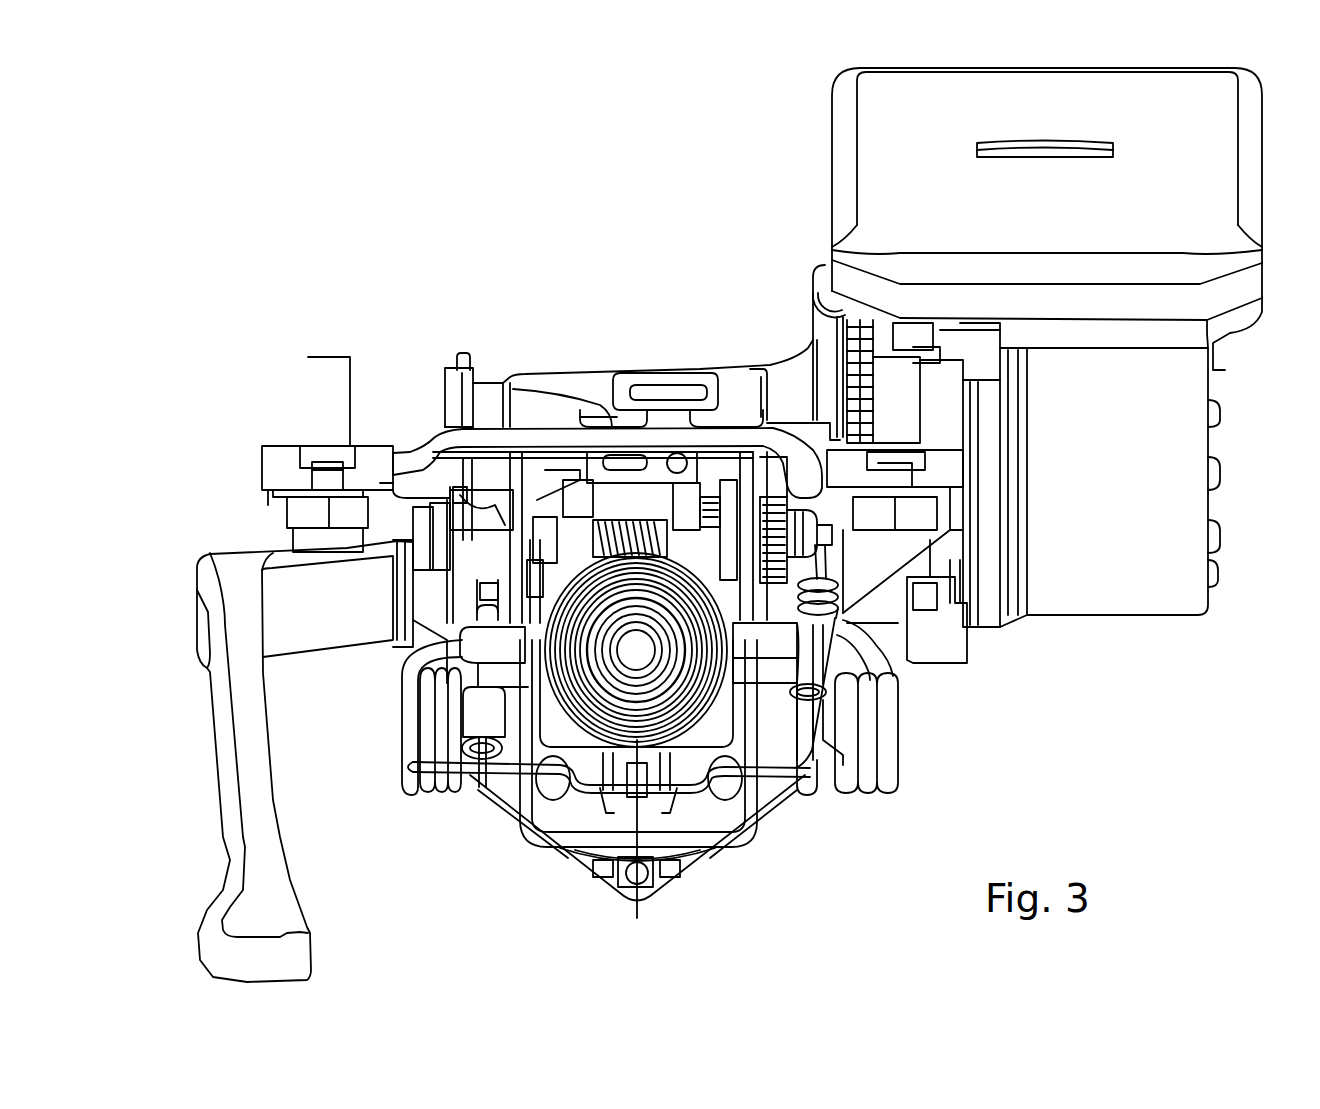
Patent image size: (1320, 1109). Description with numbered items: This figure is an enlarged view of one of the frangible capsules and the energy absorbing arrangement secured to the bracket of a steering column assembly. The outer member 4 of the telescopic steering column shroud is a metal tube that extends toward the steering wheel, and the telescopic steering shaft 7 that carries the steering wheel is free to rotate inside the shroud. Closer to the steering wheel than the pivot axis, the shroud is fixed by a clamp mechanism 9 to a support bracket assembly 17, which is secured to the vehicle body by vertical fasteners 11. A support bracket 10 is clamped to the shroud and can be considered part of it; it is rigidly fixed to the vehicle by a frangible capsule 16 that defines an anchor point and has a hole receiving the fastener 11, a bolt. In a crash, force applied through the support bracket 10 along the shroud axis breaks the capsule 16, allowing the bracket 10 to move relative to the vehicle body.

The outer member 4 is at (733, 680).
The telescopic steering shaft 7 is at (612, 690).
The clamp mechanism 9 is at (715, 532).
The support bracket 10 is at (455, 437).
The fastener 11 is at (277, 510).
The frangible capsule 16 is at (280, 463).
The support bracket assembly 17 is at (558, 440).